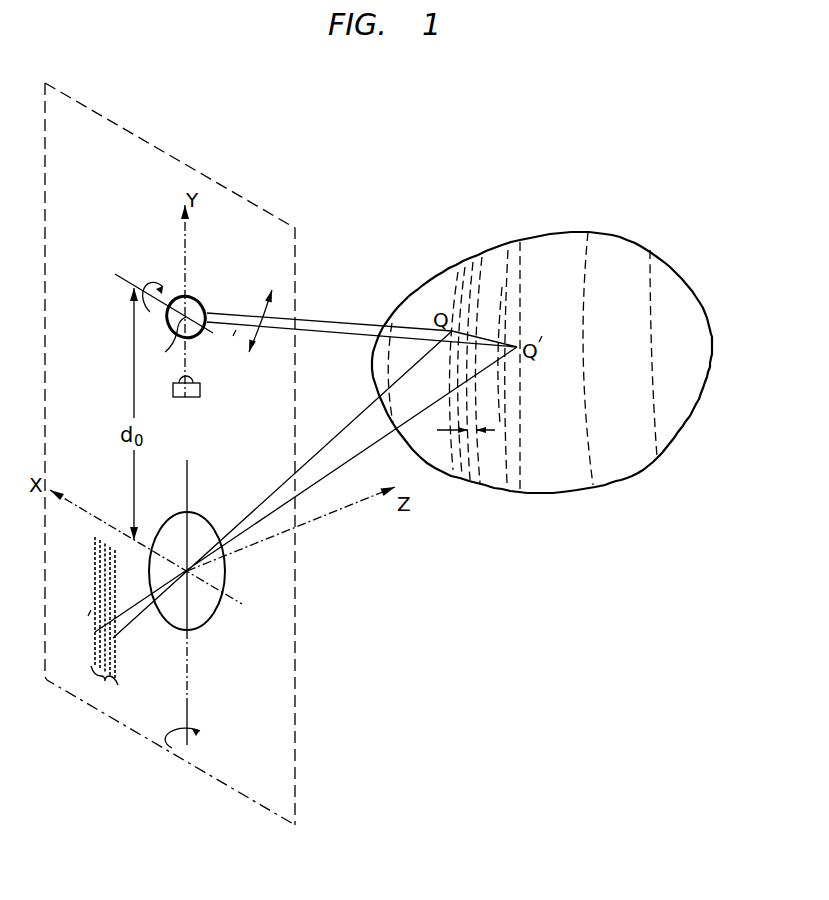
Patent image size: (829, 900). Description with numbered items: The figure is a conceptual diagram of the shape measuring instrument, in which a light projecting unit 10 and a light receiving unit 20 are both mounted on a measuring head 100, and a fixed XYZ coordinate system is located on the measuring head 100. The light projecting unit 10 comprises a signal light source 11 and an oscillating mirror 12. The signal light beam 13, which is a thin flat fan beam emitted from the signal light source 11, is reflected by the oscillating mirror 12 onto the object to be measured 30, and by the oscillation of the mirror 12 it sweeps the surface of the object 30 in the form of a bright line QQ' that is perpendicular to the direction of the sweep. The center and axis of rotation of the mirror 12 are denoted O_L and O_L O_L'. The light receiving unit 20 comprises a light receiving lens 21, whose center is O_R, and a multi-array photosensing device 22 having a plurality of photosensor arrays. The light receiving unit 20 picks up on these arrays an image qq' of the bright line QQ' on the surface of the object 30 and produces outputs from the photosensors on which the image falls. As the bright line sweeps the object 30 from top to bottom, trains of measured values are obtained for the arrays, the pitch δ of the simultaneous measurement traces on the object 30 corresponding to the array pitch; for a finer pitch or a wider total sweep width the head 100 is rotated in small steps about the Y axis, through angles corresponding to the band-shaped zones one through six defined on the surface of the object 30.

The measuring head 100 is at (38, 308).
The light projecting unit 10 is at (168, 329).
The signal light source 11 is at (200, 389).
The oscillating mirror 12 is at (202, 296).
The signal light beam 13 is at (352, 324).
The light receiving unit 20 is at (156, 604).
The light receiving lens 21 is at (226, 571).
The multi-array photosensing device 22 is at (104, 680).
The object to be measured 30 is at (612, 225).